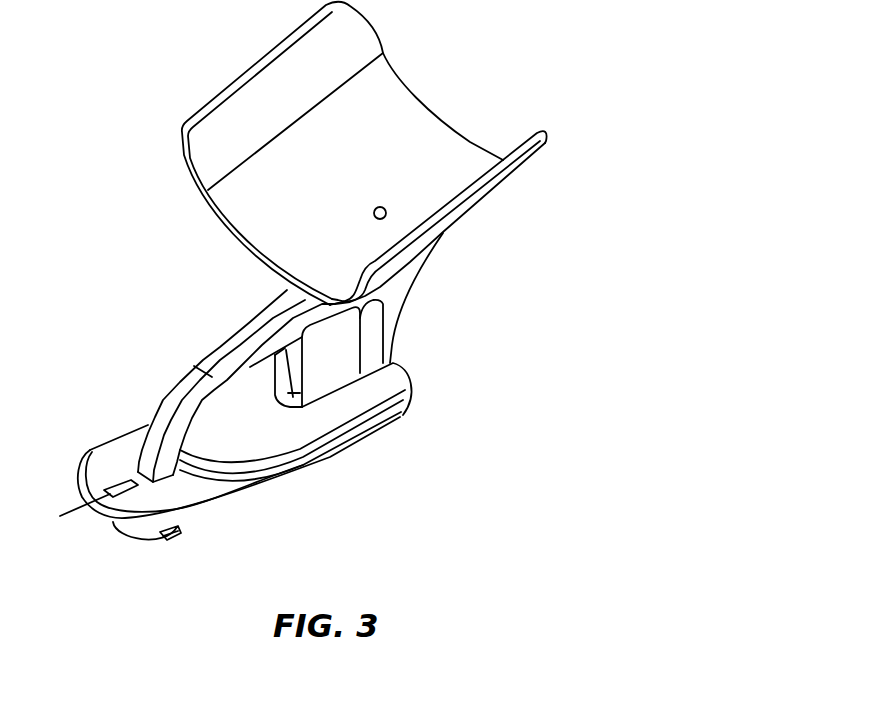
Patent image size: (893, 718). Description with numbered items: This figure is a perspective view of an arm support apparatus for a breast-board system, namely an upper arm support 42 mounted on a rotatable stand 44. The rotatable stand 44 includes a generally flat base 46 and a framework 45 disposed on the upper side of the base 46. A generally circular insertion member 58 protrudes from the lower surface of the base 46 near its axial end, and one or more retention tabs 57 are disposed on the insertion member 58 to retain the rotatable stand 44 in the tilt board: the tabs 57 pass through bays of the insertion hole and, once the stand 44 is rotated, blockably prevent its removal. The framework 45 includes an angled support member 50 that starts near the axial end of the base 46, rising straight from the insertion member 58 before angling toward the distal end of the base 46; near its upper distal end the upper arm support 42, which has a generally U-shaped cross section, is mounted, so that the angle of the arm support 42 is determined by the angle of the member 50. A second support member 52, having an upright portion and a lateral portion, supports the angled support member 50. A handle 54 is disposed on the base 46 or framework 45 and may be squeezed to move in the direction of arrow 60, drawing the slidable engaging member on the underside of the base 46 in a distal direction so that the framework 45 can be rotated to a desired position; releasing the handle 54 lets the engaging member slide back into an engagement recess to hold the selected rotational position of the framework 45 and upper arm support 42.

The upper arm support 42 is at (400, 110).
The rotatable stand 44 is at (160, 312).
The framework 45 is at (237, 337).
The base 46 is at (115, 449).
The angled support member 50 is at (185, 403).
The second support member 52 is at (393, 303).
The handle 54 is at (327, 378).
The retention tab 57 is at (180, 533).
The insertion member 58 is at (123, 527).
The arrow 60 is at (430, 333).